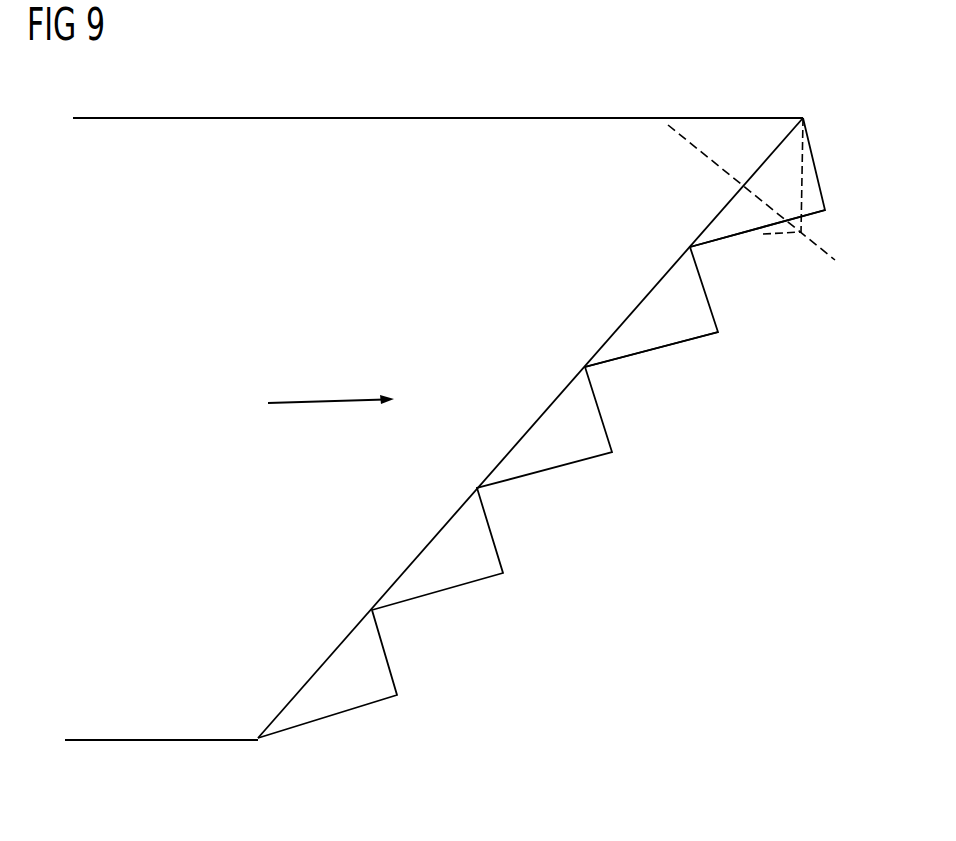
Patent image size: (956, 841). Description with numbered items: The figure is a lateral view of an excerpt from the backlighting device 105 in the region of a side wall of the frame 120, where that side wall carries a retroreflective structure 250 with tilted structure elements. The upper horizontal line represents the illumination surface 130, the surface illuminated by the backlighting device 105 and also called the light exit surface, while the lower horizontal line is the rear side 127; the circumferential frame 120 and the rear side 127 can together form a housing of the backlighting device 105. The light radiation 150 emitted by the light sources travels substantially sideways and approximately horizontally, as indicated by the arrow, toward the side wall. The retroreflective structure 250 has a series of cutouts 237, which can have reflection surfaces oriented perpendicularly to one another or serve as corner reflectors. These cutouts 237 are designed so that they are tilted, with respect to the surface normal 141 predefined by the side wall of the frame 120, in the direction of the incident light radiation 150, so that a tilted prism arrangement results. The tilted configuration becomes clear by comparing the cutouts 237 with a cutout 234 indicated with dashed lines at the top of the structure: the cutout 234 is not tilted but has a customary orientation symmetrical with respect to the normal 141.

The backlighting device 105 is at (363, 63).
The illumination surface 130 is at (200, 118).
The rear side 127 is at (143, 742).
The frame 120 is at (545, 428).
The retroreflective structure 250 is at (695, 508).
The cutouts 237 is at (670, 345).
The cutout 234 is at (765, 237).
The surface normal 141 is at (690, 147).
The light radiation 150 is at (325, 402).